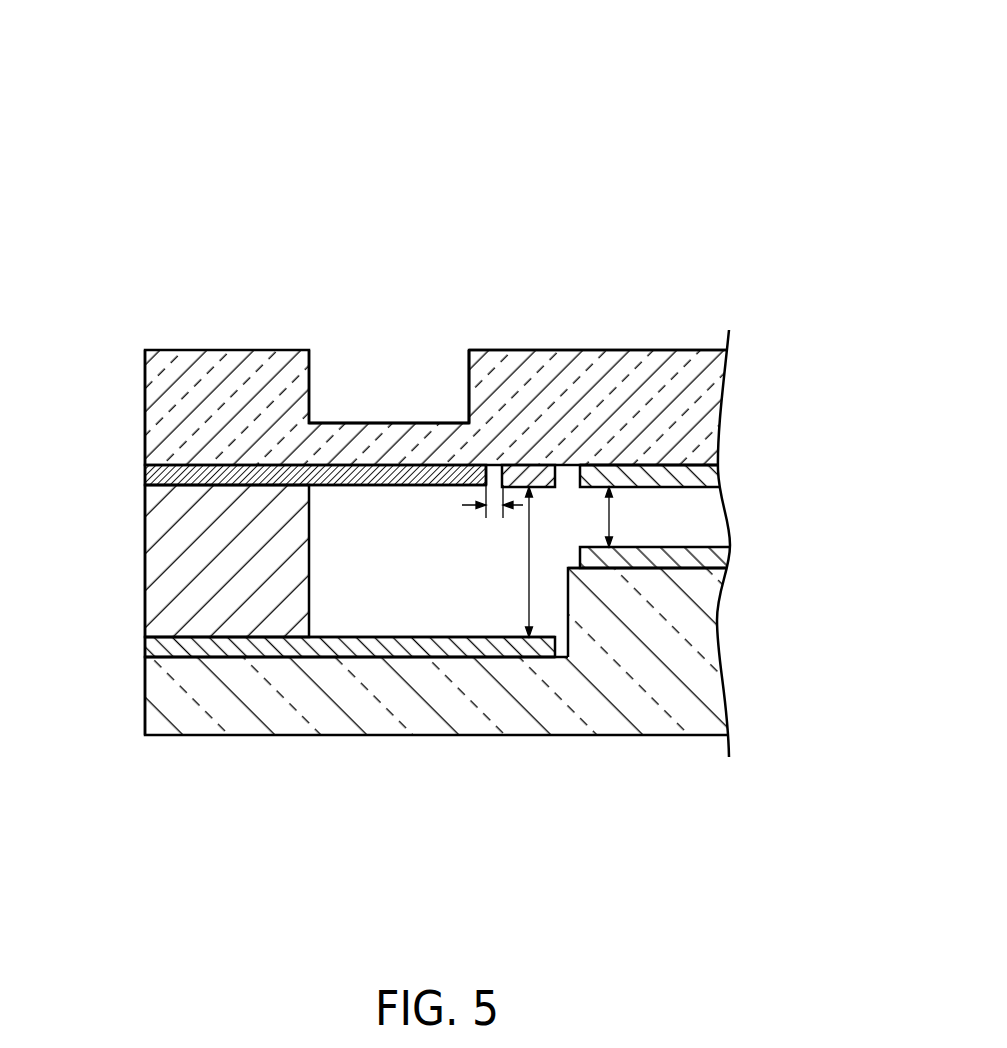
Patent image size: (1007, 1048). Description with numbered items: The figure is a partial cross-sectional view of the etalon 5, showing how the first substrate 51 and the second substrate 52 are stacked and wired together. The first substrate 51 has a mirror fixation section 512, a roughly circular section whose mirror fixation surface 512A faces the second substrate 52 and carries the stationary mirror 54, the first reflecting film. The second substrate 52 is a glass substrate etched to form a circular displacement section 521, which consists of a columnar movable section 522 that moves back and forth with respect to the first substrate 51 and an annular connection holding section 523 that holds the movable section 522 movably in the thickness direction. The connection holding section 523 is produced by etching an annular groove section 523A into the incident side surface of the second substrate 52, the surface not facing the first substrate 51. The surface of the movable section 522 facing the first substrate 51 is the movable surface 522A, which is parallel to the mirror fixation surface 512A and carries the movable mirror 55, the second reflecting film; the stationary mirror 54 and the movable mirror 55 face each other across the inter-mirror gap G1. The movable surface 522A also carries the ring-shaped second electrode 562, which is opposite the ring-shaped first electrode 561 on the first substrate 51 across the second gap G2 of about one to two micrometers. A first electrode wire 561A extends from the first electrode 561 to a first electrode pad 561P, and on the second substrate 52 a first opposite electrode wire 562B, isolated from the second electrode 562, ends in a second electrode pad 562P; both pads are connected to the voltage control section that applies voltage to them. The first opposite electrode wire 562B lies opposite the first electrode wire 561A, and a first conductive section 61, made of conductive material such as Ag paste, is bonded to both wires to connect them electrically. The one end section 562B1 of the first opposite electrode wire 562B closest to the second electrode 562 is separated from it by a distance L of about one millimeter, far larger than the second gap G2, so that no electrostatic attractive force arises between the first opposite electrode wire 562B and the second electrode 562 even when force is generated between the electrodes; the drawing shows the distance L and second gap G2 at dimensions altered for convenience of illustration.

The etalon 5 is at (549, 152).
The first substrate 51 is at (148, 690).
The mirror fixation section 512 is at (568, 610).
The mirror fixation surface 512A is at (700, 562).
The second substrate 52 is at (148, 415).
The displacement section 521 is at (603, 278).
The movable section 522 is at (657, 365).
The movable surface 522A is at (717, 470).
The connection holding section 523 is at (378, 445).
The annular groove section 523A is at (468, 378).
The stationary mirror 54 is at (708, 552).
The movable mirror 55 is at (720, 480).
The first electrode 561 is at (528, 648).
The first electrode wire 561A is at (373, 637).
The first electrode pad 561P is at (148, 647).
The second electrode 562 is at (522, 473).
The first opposite electrode wire 562B is at (375, 486).
The one end section 562B1 is at (492, 482).
The second electrode pad 562P is at (148, 476).
The first conductive section 61 is at (160, 568).
The inter-mirror gap G1 is at (623, 517).
The second gap G2 is at (515, 562).
The distance L is at (494, 504).